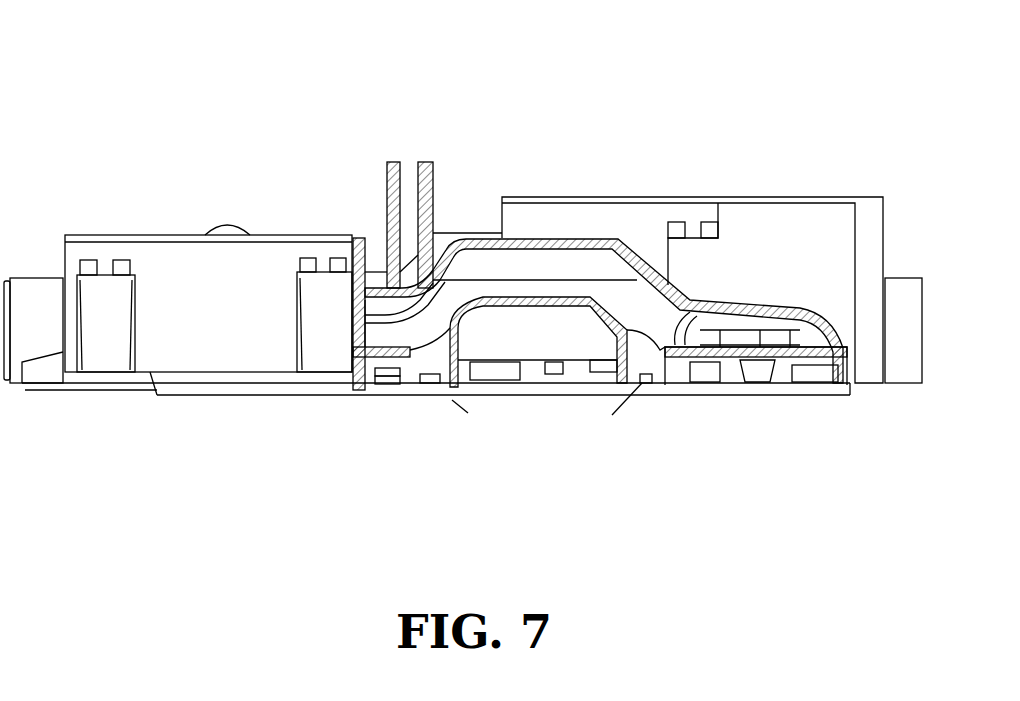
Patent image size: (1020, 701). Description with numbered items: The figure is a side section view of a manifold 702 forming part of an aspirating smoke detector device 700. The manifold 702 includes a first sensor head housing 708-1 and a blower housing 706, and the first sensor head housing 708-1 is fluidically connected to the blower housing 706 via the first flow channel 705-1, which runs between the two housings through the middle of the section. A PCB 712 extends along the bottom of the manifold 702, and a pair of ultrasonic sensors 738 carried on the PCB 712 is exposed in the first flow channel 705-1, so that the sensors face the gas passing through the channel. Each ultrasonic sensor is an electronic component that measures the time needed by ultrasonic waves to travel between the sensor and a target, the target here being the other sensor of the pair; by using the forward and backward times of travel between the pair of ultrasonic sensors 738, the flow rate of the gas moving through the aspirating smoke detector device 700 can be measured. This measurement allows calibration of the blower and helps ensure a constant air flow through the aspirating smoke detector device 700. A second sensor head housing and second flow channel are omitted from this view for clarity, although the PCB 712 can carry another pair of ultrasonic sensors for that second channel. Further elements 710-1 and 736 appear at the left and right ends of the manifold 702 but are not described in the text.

The aspirating smoke detector device 700 is at (218, 66).
The manifold 702 is at (357, 238).
The first flow channel 705-1 is at (500, 288).
The blower housing 706 is at (762, 197).
The first sensor head housing 708-1 is at (178, 262).
The left end block 710-1 is at (32, 278).
The PCB 712 is at (372, 392).
The right end block 736 is at (906, 278).
The pair of ultrasonic sensors 738 is at (643, 378).